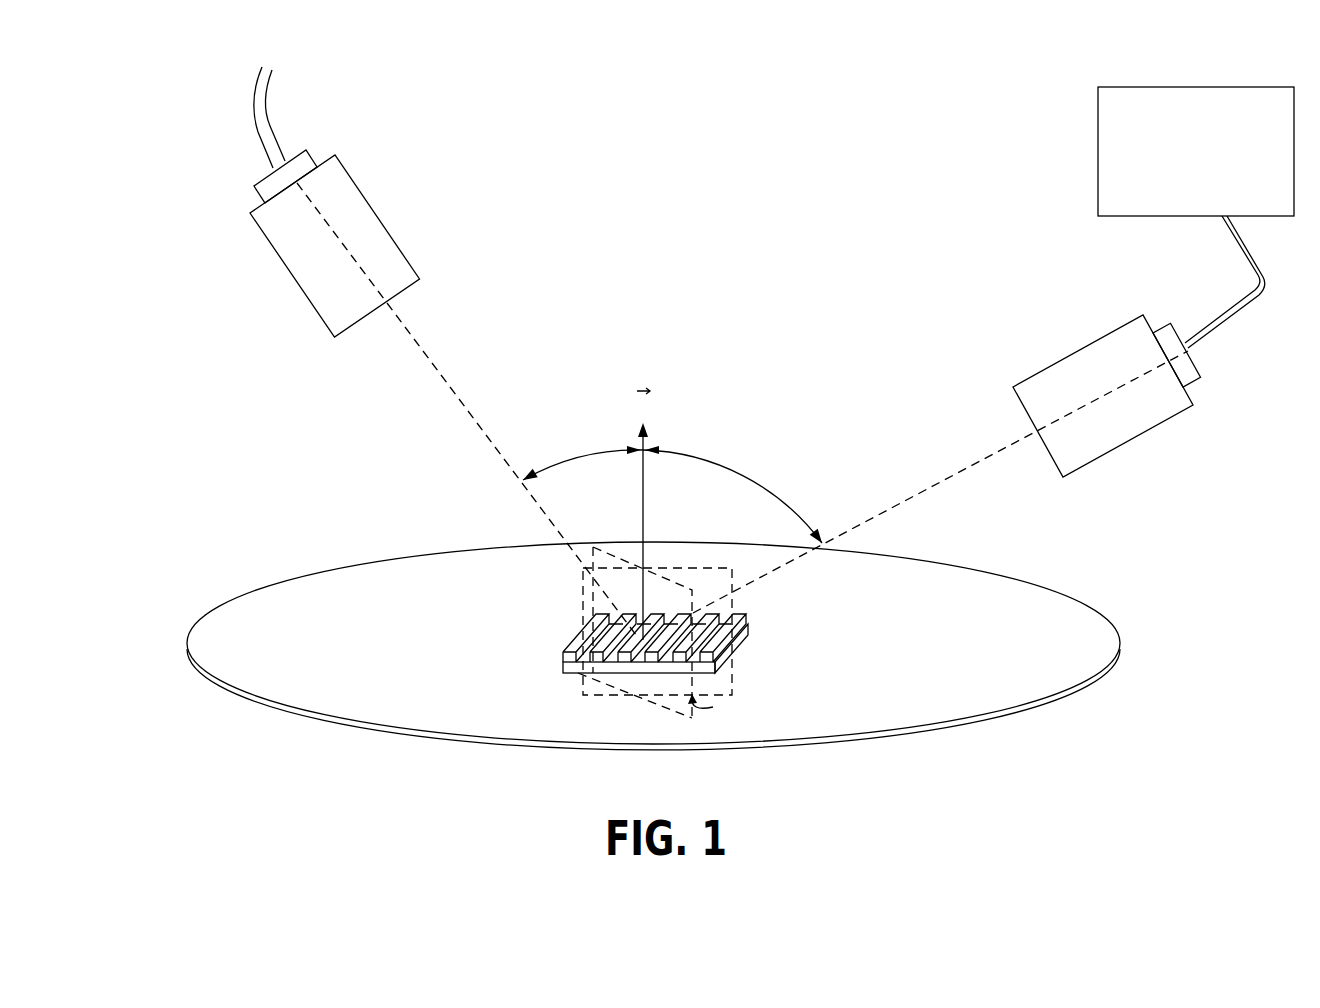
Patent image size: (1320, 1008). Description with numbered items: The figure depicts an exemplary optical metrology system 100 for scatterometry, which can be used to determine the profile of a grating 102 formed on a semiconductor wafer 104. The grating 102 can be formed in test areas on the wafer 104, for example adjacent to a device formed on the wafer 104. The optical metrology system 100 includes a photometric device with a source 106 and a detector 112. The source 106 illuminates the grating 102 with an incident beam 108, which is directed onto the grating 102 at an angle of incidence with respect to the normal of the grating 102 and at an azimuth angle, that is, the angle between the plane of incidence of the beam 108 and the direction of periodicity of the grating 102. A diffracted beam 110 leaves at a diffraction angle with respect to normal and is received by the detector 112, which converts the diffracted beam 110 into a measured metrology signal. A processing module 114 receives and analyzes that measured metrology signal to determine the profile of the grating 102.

The optical metrology system 100 is at (186, 132).
The grating 102 is at (566, 682).
The semiconductor wafer 104 is at (257, 587).
The source 106 is at (379, 200).
The incident beam 108 is at (450, 382).
The diffracted beam 110 is at (898, 505).
The detector 112 is at (1172, 417).
The processing module 114 is at (1149, 124).